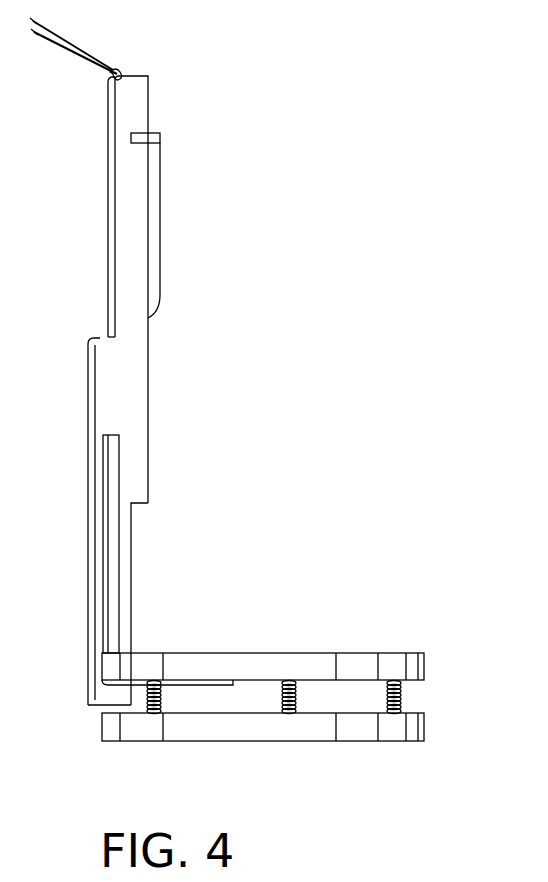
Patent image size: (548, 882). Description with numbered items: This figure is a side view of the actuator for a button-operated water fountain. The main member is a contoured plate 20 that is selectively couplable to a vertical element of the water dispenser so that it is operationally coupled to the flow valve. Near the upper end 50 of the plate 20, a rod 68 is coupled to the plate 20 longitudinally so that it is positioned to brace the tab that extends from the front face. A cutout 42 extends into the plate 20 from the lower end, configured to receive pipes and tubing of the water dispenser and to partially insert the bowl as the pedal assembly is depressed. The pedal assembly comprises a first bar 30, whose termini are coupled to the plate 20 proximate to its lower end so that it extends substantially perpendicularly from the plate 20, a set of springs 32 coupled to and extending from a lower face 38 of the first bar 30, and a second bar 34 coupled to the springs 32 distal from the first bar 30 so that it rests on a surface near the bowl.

The upper end 50 is at (135, 76).
The rod 68 is at (155, 226).
The cutout 42 is at (131, 580).
The plate 20 is at (117, 352).
The first bar 30 is at (112, 662).
The lower face 38 is at (333, 680).
The second bar 34 is at (119, 727).
The springs 32 is at (160, 713).